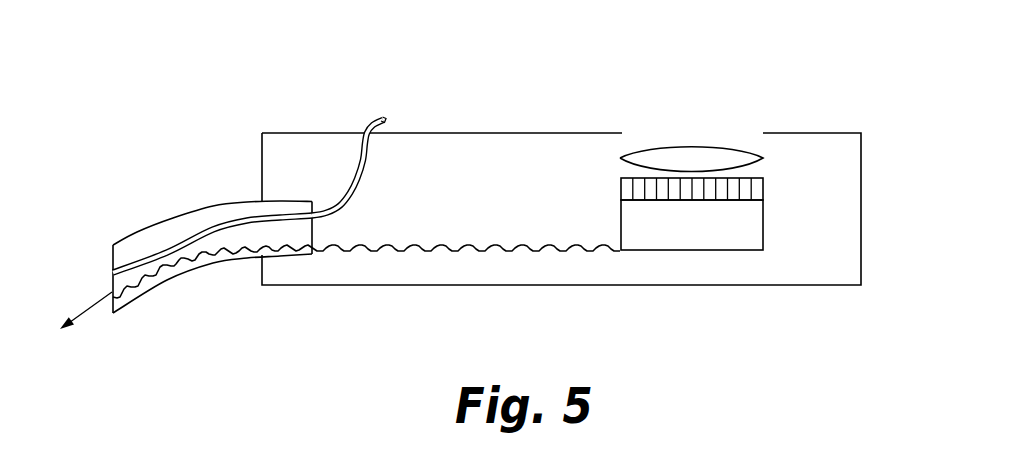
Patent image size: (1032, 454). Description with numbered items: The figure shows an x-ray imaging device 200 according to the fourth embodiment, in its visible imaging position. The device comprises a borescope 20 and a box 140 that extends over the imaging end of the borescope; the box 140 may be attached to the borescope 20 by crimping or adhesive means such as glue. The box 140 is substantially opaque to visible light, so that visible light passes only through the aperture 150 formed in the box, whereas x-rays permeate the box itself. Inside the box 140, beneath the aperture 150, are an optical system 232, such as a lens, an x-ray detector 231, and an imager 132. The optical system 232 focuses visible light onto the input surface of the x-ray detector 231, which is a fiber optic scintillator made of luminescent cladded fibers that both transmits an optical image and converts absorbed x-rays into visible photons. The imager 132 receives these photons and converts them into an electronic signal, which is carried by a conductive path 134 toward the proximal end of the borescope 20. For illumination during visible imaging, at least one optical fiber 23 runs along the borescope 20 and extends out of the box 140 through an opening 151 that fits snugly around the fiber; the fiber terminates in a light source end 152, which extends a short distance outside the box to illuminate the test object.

The x-ray imaging device 200 is at (494, 182).
The borescope 20 is at (148, 268).
The optical fiber 23 is at (228, 223).
The opening 151 is at (365, 132).
The light source end 152 is at (380, 117).
The conductive path 134 is at (383, 250).
The box 140 is at (792, 277).
The aperture 150 is at (774, 149).
The optical system 232 is at (743, 157).
The x-ray detector 231 is at (743, 188).
The imager 132 is at (745, 227).